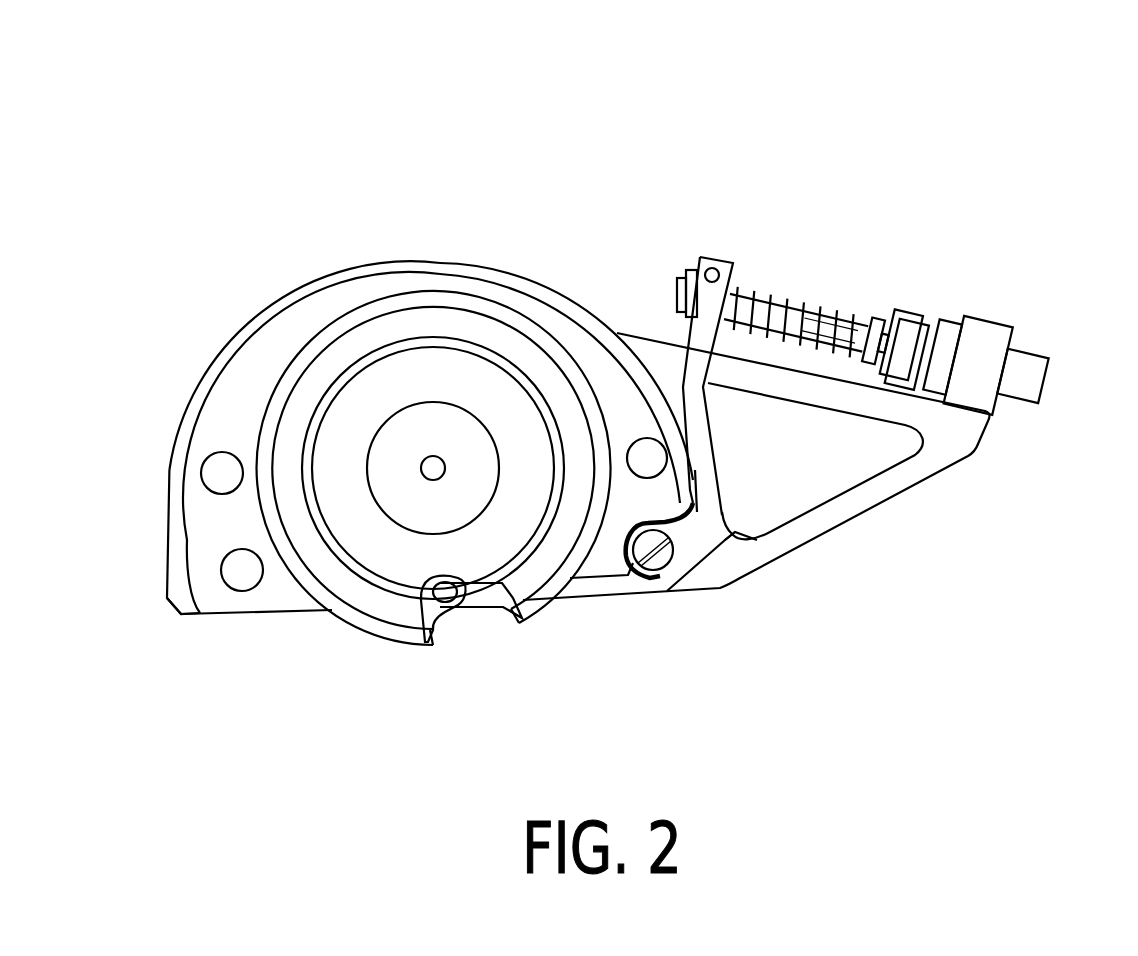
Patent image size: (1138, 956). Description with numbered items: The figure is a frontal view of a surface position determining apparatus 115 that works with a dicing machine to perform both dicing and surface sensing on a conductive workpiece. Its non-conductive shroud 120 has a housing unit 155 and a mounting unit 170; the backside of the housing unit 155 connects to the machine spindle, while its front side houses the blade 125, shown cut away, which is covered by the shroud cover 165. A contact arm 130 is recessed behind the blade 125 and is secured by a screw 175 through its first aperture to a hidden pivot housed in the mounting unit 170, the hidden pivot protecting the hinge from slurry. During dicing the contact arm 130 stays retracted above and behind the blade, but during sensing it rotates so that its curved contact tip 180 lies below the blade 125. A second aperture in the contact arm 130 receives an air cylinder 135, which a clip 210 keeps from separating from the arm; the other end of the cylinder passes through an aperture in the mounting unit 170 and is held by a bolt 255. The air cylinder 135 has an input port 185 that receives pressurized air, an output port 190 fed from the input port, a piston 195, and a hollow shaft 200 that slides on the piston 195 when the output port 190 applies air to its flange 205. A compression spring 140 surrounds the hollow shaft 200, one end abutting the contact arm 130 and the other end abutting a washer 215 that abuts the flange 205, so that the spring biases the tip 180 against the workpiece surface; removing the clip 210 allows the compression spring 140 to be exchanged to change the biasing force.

The surface position determining apparatus 115 is at (472, 115).
The air cylinder 135 is at (883, 168).
The shroud cover 165 is at (290, 312).
The shroud 120 is at (181, 425).
The housing unit 155 is at (184, 606).
The blade 125 is at (385, 643).
The curved contact tip 180 is at (453, 645).
The screw 175 is at (652, 573).
The contact arm 130 is at (735, 533).
The mounting unit 170 is at (840, 524).
The washer 215 is at (862, 362).
The flange 205 is at (883, 343).
The clip 210 is at (696, 266).
The hollow shaft 200 is at (796, 323).
The compression spring 140 is at (829, 330).
The piston 195 is at (873, 340).
The output port 190 is at (904, 349).
The bolt 255 is at (942, 356).
The input port 185 is at (999, 370).